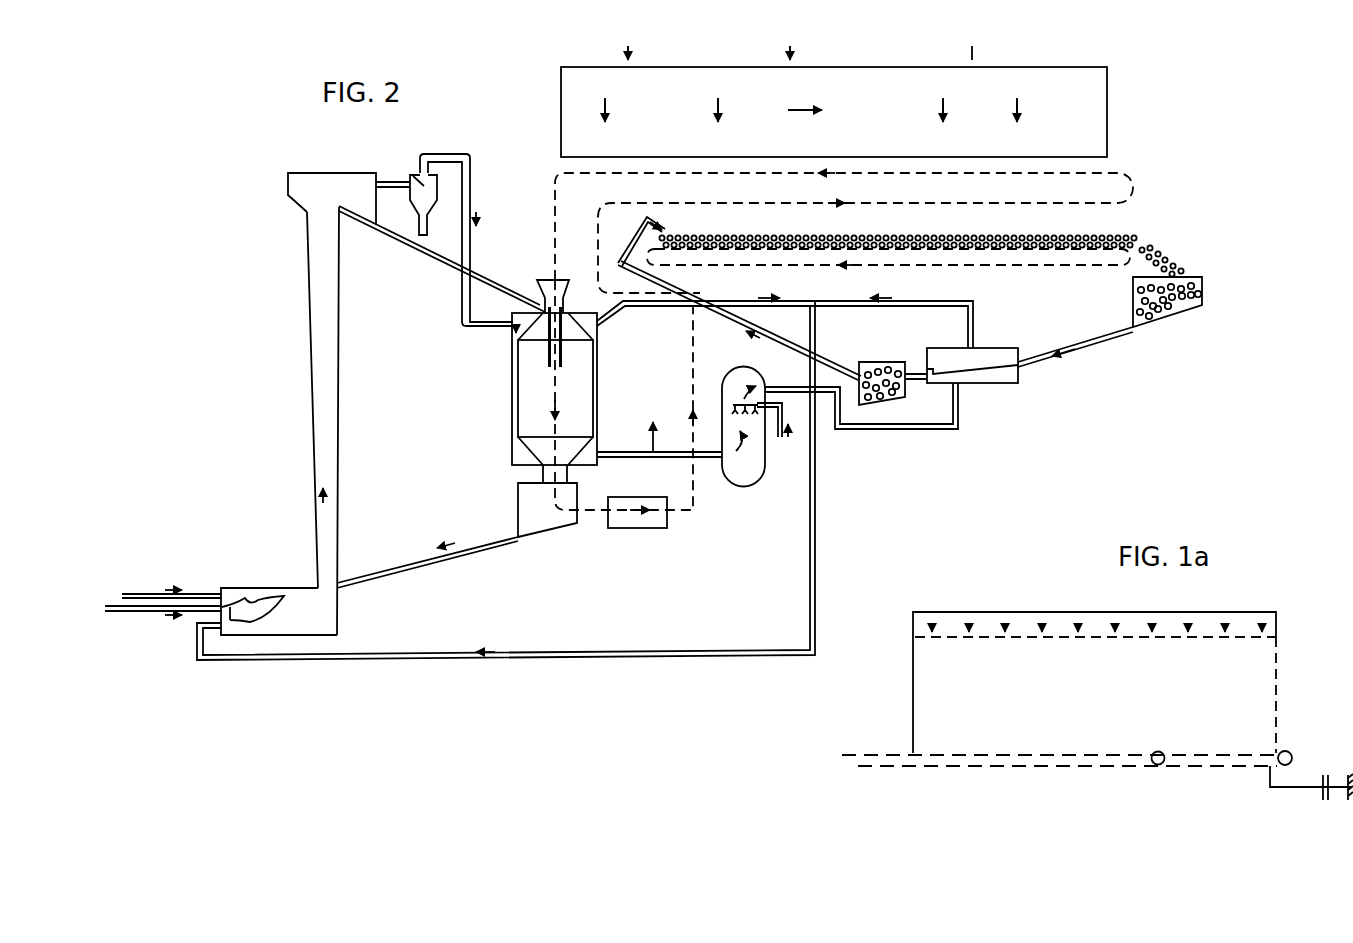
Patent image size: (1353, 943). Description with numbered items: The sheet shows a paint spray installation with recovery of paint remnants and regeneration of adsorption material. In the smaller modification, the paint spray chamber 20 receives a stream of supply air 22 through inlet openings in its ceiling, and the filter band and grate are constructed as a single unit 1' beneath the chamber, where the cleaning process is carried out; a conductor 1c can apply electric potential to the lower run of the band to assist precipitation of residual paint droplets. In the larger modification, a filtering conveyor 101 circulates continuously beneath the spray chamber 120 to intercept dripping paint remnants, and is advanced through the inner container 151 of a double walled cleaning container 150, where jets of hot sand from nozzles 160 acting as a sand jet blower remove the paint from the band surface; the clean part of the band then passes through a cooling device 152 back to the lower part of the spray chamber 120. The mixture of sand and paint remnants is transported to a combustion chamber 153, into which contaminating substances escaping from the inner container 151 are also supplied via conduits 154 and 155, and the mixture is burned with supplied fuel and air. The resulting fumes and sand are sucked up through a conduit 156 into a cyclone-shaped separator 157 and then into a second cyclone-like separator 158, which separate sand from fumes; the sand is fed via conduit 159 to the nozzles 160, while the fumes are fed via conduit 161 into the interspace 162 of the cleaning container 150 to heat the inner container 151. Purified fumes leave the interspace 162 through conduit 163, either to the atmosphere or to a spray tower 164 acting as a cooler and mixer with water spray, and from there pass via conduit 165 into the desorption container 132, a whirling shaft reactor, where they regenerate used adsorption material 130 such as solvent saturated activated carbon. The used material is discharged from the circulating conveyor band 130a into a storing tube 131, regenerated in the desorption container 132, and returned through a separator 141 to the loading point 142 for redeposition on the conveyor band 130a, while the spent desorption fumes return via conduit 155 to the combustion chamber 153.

In FIG. 2, the filtering conveyor 101 is at (813, 233).
In FIG. 2, the spray chamber 120 is at (834, 101).
In FIG. 2, the adsorption material 130 is at (921, 241).
In FIG. 2, the conveyor band 130a is at (888, 274).
In FIG. 2, the storing tube 131 is at (1140, 302).
In FIG. 2, the desorption container 132 is at (1030, 342).
In FIG. 2, the separator 141 is at (884, 364).
In FIG. 2, the loading point 142 is at (662, 221).
In FIG. 2, the cleaning container 150 is at (514, 372).
In FIG. 2, the inner container 151 is at (524, 396).
In FIG. 2, the cooling device 152 is at (634, 416).
In FIG. 2, the combustion chamber 153 is at (221, 642).
In FIG. 2, the conduit 154 is at (739, 320).
In FIG. 2, the conduit 155 is at (585, 496).
In FIG. 2, the conduit 156 is at (298, 421).
In FIG. 2, the separator 157 is at (304, 200).
In FIG. 2, the second cyclone-like separator 158 is at (406, 187).
In FIG. 2, the conduit 159 is at (442, 259).
In FIG. 2, the nozzles 160 is at (598, 341).
In FIG. 2, the conduit 161 is at (454, 243).
In FIG. 2, the interspace 162 is at (465, 450).
In FIG. 2, the conduit 163 is at (659, 434).
In FIG. 2, the spray tower 164 is at (755, 444).
In FIG. 2, the conduit 165 is at (861, 429).
In FIG. 1A, the single unit 1' is at (1059, 739).
In FIG. 1A, the conductor 1c is at (1301, 787).
In FIG. 1A, the paint spray chamber 20 is at (1094, 682).
In FIG. 1A, the supply air 22 is at (1095, 655).